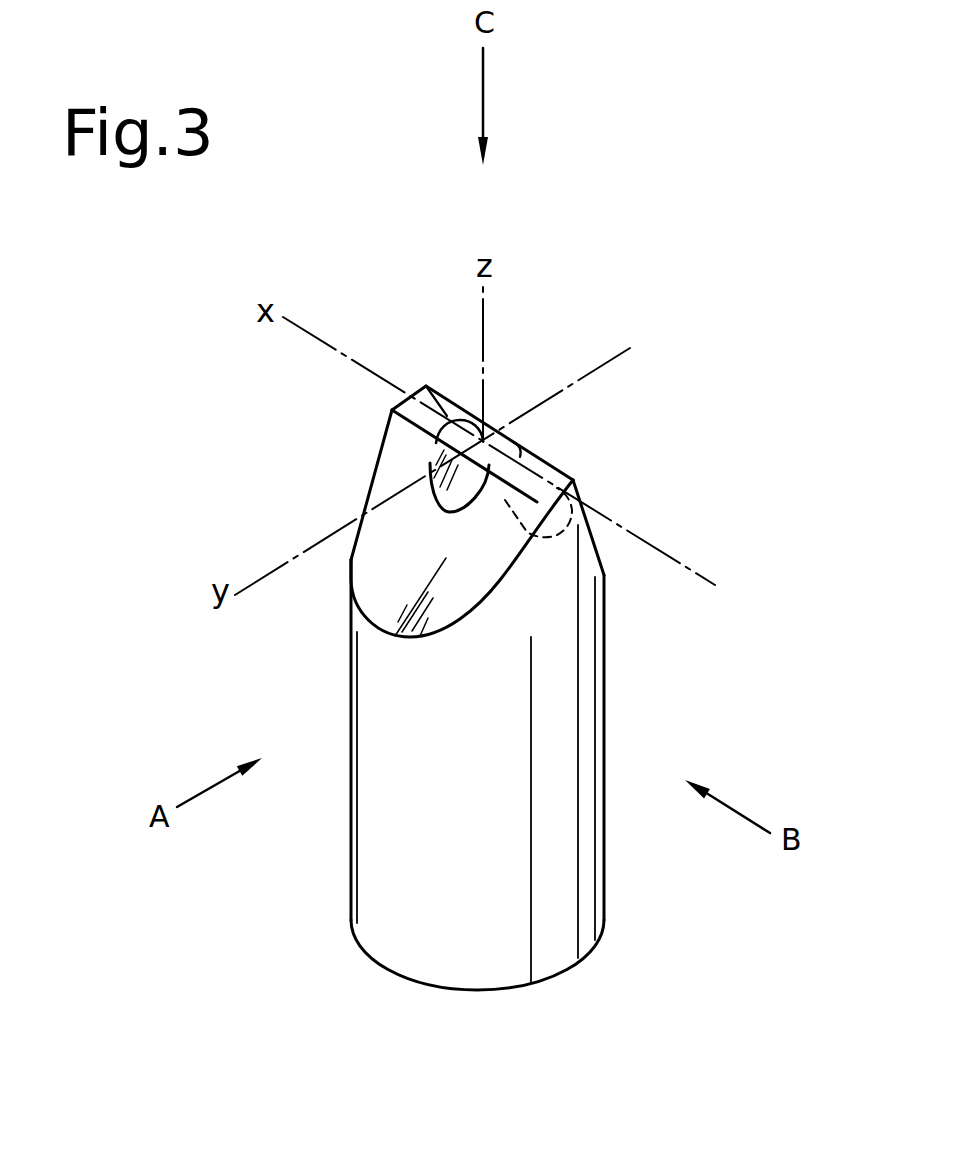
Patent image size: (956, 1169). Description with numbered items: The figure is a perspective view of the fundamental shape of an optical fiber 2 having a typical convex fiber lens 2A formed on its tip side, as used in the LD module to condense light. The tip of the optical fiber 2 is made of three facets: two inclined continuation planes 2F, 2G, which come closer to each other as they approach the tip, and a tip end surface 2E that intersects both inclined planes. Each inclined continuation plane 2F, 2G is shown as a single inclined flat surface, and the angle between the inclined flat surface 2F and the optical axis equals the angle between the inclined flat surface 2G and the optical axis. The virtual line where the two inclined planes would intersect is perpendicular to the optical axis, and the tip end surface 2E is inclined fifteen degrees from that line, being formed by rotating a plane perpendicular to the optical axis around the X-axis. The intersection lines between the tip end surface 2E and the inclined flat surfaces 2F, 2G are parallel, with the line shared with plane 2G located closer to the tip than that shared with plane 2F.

The optical fiber 2 is at (382, 895).
The convex fiber lens 2A is at (708, 381).
The tip end surface 2E is at (555, 449).
The inclined continuation plane 2F is at (388, 460).
The inclined continuation plane 2G is at (600, 496).